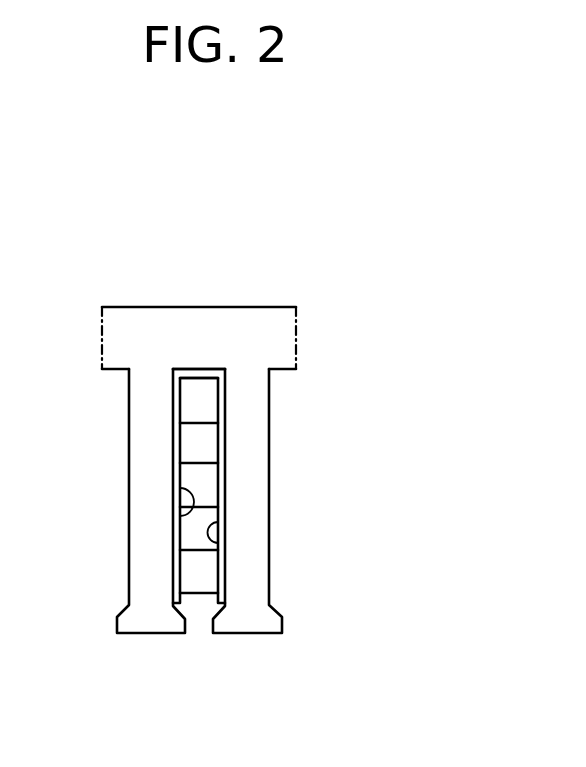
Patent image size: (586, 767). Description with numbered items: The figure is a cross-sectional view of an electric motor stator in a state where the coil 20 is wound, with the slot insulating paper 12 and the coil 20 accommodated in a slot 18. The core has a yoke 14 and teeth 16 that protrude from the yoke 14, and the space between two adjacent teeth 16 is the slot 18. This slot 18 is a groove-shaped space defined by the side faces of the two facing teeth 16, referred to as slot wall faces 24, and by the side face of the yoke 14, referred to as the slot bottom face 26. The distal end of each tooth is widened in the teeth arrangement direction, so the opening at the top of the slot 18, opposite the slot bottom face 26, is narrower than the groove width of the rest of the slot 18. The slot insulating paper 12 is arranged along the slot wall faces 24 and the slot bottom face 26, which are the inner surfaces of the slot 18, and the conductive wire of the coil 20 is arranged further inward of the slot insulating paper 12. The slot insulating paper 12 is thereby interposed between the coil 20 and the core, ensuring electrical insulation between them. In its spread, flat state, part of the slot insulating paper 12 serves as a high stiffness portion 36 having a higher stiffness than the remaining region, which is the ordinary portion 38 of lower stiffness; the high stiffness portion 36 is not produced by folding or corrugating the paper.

The slot insulating paper 12 is at (229, 461).
The yoke 14 is at (199, 322).
The teeth 16 is at (148, 622).
The slot 18 is at (199, 623).
The coil 20 is at (219, 405).
The slot wall faces 24 is at (175, 522).
The slot bottom face 26 is at (207, 383).
The high stiffness portion 36 is at (190, 378).
The ordinary portion 38 is at (219, 441).